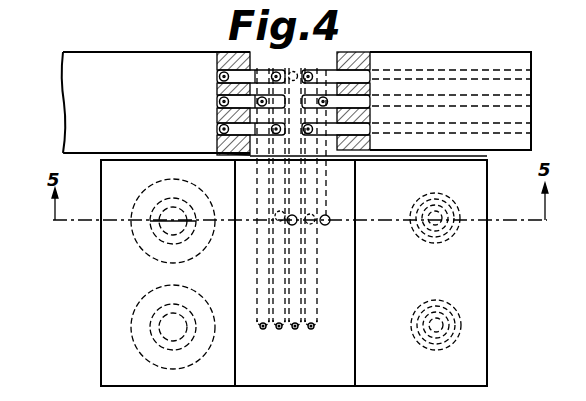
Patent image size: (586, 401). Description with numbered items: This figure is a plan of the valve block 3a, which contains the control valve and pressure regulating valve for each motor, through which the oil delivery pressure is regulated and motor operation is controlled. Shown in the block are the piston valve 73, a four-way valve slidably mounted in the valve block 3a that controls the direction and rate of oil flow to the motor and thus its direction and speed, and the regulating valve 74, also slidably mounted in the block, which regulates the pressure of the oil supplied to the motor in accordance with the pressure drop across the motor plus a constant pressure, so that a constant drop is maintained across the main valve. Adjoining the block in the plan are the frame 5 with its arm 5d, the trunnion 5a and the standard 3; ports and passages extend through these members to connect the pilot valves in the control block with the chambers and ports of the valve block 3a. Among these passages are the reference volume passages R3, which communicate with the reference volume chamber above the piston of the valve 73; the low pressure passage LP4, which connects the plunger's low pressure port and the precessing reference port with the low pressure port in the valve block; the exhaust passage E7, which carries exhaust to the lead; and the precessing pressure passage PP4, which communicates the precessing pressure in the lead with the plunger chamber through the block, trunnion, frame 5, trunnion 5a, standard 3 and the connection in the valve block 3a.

The frame 5 is at (62, 73).
The trunnion 5a is at (215, 148).
The arm of the frame 5d is at (448, 62).
The piston valve 73 is at (146, 273).
The regulating valve 74 is at (439, 273).
The standard 3 is at (292, 347).
The valve block 3a is at (78, 338).
The passages R3 is at (283, 213).
The exhaust passage E7 is at (290, 221).
The precessing pressure passage PP4 is at (324, 214).
The low pressure passage LP4 is at (306, 222).